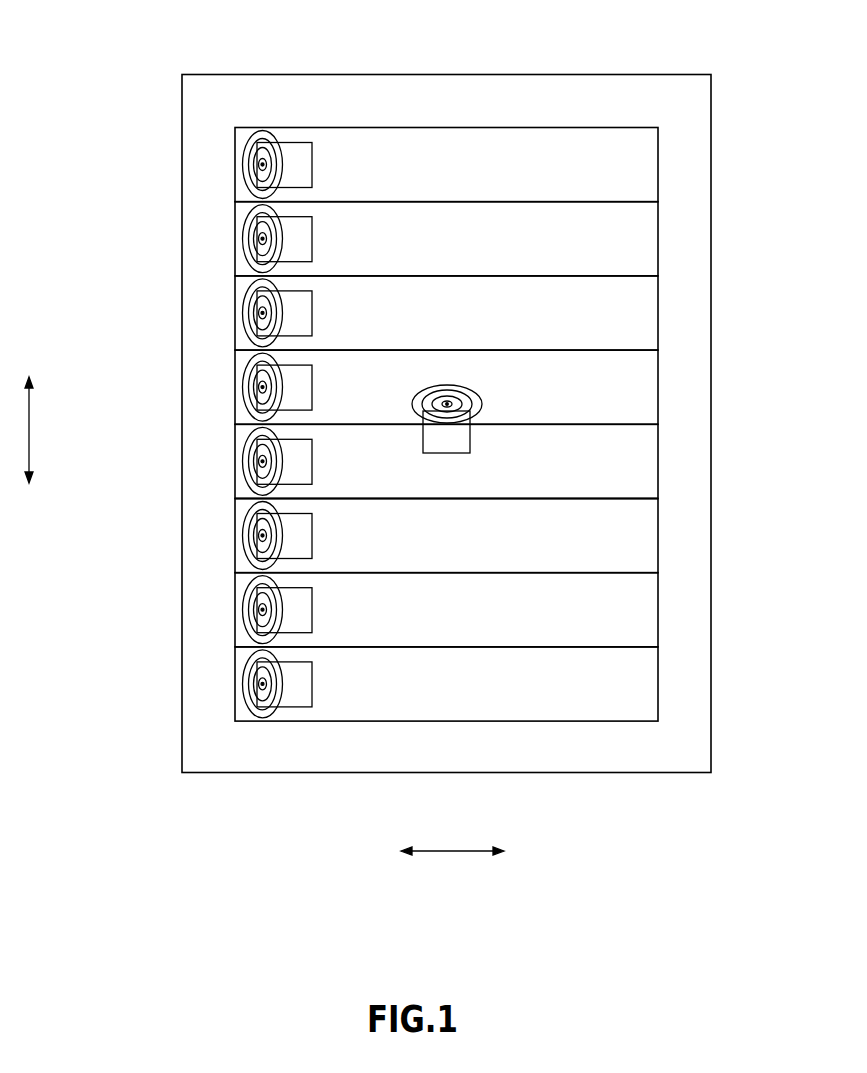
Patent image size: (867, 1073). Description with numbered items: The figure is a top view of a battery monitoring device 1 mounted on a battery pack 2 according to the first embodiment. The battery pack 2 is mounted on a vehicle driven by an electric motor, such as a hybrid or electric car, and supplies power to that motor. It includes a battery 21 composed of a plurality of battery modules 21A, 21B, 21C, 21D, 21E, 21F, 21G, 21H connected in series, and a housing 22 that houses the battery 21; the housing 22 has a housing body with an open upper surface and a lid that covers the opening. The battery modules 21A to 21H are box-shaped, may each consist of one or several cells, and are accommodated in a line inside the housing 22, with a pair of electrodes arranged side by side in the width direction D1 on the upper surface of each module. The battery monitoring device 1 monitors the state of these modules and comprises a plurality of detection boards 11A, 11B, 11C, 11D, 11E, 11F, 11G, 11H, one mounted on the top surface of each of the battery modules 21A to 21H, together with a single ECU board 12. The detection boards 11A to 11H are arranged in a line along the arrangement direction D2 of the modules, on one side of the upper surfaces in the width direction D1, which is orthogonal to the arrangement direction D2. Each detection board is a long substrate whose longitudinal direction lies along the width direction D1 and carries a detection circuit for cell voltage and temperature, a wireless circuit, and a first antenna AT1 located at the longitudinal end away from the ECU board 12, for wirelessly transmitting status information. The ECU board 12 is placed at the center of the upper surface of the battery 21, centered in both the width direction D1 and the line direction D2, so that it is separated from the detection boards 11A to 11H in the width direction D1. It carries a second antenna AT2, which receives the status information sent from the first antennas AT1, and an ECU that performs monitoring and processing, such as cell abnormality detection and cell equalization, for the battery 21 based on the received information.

The battery monitoring device 1 is at (613, 868).
The battery pack 2 is at (636, 74).
The detection board 11A is at (299, 164).
The detection board 11B is at (299, 239).
The detection board 11C is at (299, 313).
The detection board 11D is at (299, 387).
The detection board 11E is at (299, 461).
The detection board 11F is at (299, 536).
The detection board 11G is at (299, 610).
The detection board 11H is at (299, 684).
The ECU board 12 is at (464, 399).
The battery 21 is at (507, 484).
The battery module 21A is at (643, 168).
The battery module 21B is at (643, 242).
The battery module 21C is at (643, 316).
The battery module 21D is at (643, 390).
The battery module 21E is at (643, 465).
The battery module 21F is at (643, 539).
The battery module 21G is at (643, 613).
The battery module 21H is at (643, 687).
The housing 22 is at (698, 502).
The first antenna AT1 is at (262, 164).
The second antenna AT2 is at (446, 403).
The width direction D1 is at (453, 853).
The arrangement direction D2 is at (32, 428).